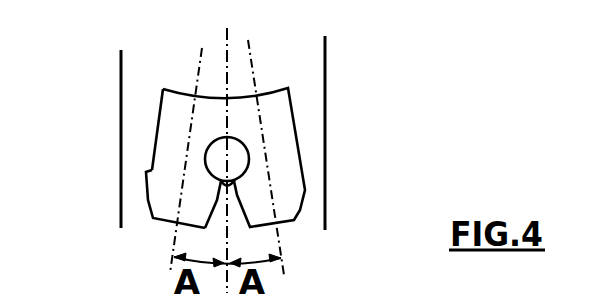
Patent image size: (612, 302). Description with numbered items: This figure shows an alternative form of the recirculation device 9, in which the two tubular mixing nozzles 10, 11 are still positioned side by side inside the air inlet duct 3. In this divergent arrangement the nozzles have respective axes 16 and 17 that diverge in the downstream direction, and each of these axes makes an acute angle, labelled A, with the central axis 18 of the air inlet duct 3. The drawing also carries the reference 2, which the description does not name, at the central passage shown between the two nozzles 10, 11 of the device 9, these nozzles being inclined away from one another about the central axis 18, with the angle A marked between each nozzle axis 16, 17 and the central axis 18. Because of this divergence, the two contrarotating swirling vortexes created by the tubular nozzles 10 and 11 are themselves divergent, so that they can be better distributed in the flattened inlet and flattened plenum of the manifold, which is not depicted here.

The bore 2 is at (245, 146).
The air inlet duct 3 is at (118, 147).
The recirculation device 9 is at (158, 108).
The tubular mixing nozzle 10 is at (147, 172).
The tubular mixing nozzle 11 is at (300, 153).
The axis 16 is at (198, 71).
The axis 17 is at (252, 59).
The central axis 18 is at (230, 226).